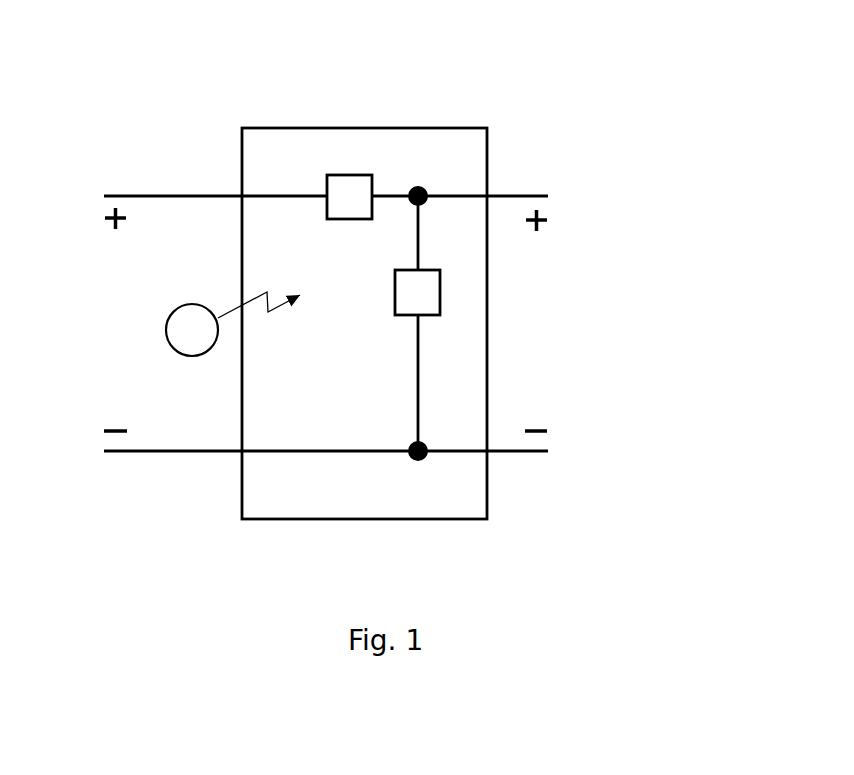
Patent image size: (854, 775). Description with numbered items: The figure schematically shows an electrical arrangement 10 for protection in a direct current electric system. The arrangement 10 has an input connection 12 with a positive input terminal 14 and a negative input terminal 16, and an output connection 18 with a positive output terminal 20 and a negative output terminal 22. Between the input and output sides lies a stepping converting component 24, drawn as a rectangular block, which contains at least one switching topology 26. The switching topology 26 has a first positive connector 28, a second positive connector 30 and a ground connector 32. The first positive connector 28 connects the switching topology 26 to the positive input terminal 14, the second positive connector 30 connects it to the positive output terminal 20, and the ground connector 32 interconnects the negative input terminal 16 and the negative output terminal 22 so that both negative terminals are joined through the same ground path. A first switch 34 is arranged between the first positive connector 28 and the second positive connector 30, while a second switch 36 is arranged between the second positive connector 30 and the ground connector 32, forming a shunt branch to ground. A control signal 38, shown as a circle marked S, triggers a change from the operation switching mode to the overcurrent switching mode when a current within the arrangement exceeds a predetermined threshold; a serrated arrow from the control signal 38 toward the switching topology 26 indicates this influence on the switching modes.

The electrical arrangement 10 is at (648, 324).
The input connection 12 is at (193, 158).
The positive input terminal 14 is at (118, 196).
The negative input terminal 16 is at (114, 455).
The output connection 18 is at (500, 160).
The positive output terminal 20 is at (535, 196).
The negative output terminal 22 is at (532, 455).
The stepping converting component 24 is at (265, 112).
The switching topology 26 is at (369, 267).
The first positive connector 28 is at (288, 196).
The second positive connector 30 is at (390, 196).
The ground connector 32 is at (354, 455).
The first switch 34 is at (350, 175).
The second switch 36 is at (441, 291).
The control signal 38 is at (163, 330).